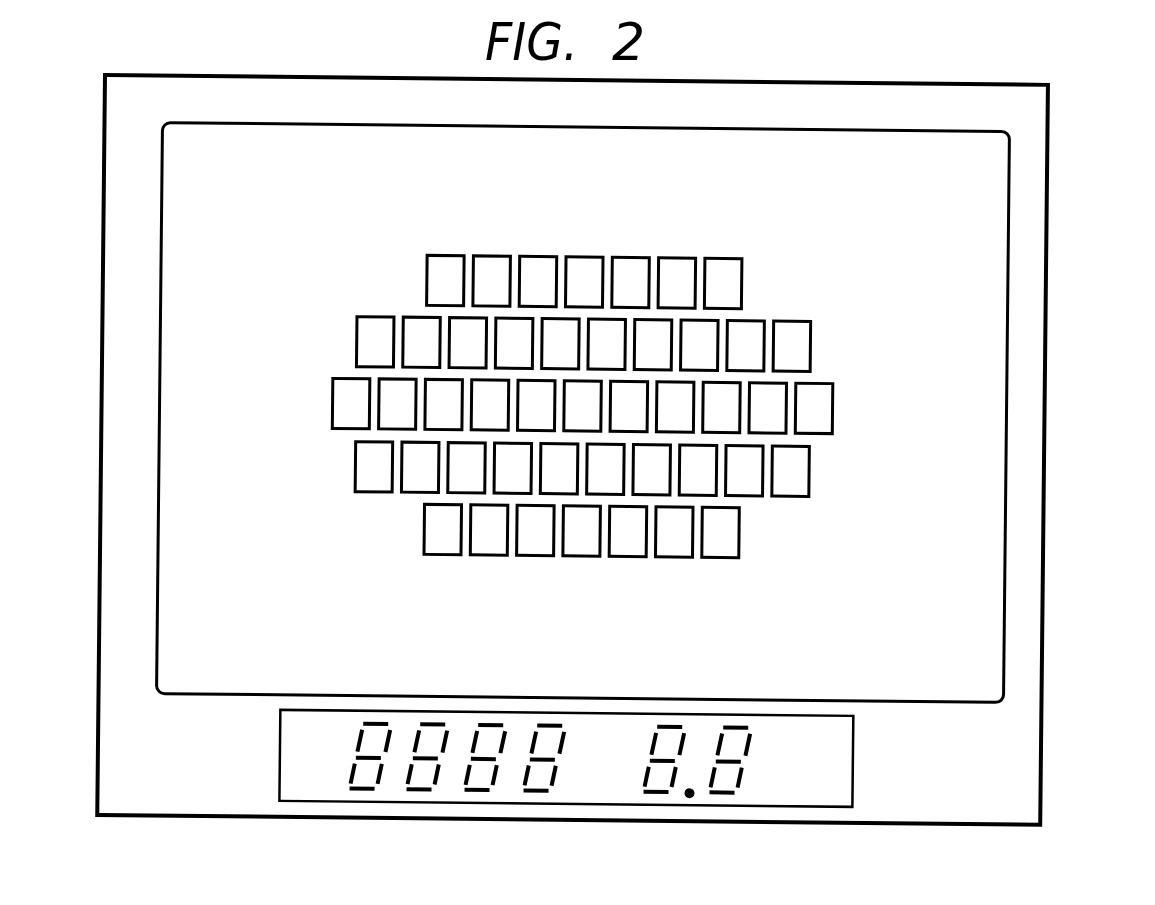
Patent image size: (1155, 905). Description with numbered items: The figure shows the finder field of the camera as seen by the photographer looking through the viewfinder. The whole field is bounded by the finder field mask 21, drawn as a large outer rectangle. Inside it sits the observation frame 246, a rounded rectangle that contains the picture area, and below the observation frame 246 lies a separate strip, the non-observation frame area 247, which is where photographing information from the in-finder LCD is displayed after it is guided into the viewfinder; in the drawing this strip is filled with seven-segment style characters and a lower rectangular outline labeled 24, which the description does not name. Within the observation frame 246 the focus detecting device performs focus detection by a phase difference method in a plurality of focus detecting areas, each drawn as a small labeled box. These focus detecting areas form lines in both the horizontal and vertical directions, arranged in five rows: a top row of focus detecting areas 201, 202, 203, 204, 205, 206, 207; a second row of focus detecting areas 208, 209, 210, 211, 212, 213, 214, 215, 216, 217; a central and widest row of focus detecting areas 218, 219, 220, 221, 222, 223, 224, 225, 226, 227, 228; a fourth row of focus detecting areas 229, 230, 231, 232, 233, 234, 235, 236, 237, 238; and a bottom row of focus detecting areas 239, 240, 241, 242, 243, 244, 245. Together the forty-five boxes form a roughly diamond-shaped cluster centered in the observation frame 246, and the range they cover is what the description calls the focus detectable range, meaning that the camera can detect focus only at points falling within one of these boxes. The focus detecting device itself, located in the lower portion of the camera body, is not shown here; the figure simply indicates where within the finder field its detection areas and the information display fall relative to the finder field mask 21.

The finder field mask 21 is at (1037, 254).
The numeric display section 24 is at (775, 792).
The observation frame 246 is at (997, 197).
The non-observation frame area 247 is at (363, 787).
The focus detecting area 201 is at (446, 280).
The focus detecting area 202 is at (492, 281).
The focus detecting area 203 is at (538, 281).
The focus detecting area 204 is at (584, 282).
The focus detecting area 205 is at (631, 282).
The focus detecting area 206 is at (677, 283).
The focus detecting area 207 is at (723, 283).
The focus detecting area 208 is at (375, 342).
The focus detecting area 209 is at (422, 342).
The focus detecting area 210 is at (468, 343).
The focus detecting area 211 is at (514, 343).
The focus detecting area 212 is at (561, 344).
The focus detecting area 213 is at (607, 344).
The focus detecting area 214 is at (653, 345).
The focus detecting area 215 is at (700, 345).
The focus detecting area 216 is at (746, 346).
The focus detecting area 217 is at (792, 346).
The focus detecting area 218 is at (351, 403).
The focus detecting area 219 is at (398, 404).
The focus detecting area 220 is at (444, 404).
The focus detecting area 221 is at (490, 405).
The focus detecting area 222 is at (537, 405).
The focus detecting area 223 is at (583, 406).
The focus detecting area 224 is at (629, 406).
The focus detecting area 225 is at (675, 407).
The focus detecting area 226 is at (722, 407).
The focus detecting area 227 is at (768, 408).
The focus detecting area 228 is at (814, 408).
The focus detecting area 229 is at (374, 467).
The focus detecting area 230 is at (420, 467).
The focus detecting area 231 is at (467, 468).
The focus detecting area 232 is at (513, 468).
The focus detecting area 233 is at (559, 469).
The focus detecting area 234 is at (606, 469).
The focus detecting area 235 is at (652, 470).
The focus detecting area 236 is at (698, 470).
The focus detecting area 237 is at (745, 471).
The focus detecting area 238 is at (791, 471).
The focus detecting area 239 is at (443, 529).
The focus detecting area 240 is at (489, 530).
The focus detecting area 241 is at (536, 530).
The focus detecting area 242 is at (582, 531).
The focus detecting area 243 is at (628, 531).
The focus detecting area 244 is at (674, 532).
The focus detecting area 245 is at (721, 532).